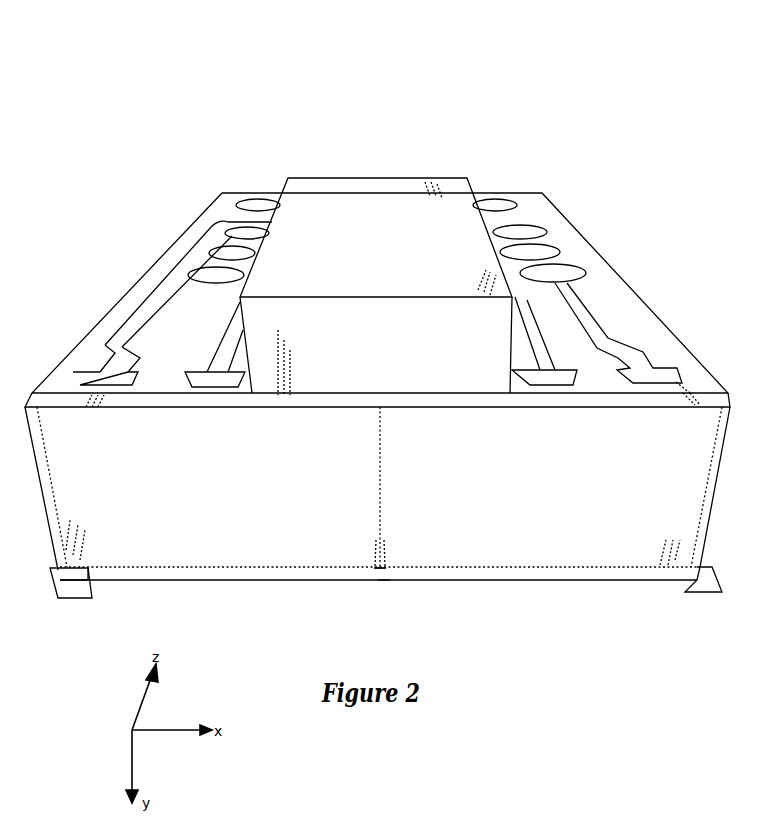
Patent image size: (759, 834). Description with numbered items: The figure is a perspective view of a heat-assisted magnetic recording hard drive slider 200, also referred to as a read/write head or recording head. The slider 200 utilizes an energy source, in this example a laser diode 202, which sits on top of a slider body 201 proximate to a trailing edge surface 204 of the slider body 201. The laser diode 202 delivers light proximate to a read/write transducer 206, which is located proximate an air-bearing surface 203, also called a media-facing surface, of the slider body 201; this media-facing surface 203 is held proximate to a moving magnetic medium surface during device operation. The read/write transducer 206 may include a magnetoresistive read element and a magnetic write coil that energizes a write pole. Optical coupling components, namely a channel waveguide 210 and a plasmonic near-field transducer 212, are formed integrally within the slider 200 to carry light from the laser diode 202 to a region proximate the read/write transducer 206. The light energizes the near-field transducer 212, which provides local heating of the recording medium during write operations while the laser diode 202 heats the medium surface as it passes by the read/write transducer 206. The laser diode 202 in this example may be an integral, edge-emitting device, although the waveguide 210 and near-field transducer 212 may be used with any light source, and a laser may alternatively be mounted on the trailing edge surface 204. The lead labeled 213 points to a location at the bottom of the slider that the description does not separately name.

The HAMR hard drive slider 200 is at (531, 89).
The slider body 201 is at (152, 278).
The laser diode 202 is at (388, 196).
The air-bearing surface 203 is at (685, 592).
The trailing edge surface 204 is at (72, 598).
The read/write transducer 206 is at (378, 568).
The plasmonic near-field transducer 212 is at (378, 568).
The channel waveguide 210 is at (382, 484).
The bottom edge 213 is at (388, 568).